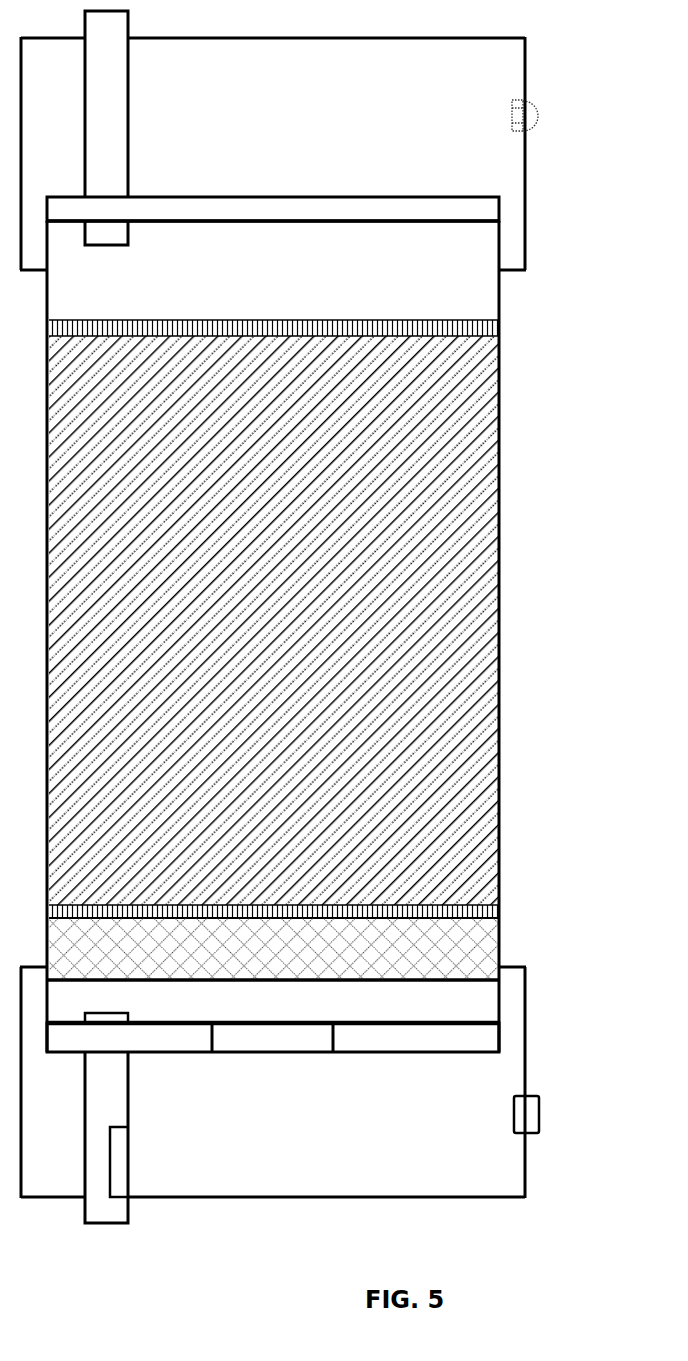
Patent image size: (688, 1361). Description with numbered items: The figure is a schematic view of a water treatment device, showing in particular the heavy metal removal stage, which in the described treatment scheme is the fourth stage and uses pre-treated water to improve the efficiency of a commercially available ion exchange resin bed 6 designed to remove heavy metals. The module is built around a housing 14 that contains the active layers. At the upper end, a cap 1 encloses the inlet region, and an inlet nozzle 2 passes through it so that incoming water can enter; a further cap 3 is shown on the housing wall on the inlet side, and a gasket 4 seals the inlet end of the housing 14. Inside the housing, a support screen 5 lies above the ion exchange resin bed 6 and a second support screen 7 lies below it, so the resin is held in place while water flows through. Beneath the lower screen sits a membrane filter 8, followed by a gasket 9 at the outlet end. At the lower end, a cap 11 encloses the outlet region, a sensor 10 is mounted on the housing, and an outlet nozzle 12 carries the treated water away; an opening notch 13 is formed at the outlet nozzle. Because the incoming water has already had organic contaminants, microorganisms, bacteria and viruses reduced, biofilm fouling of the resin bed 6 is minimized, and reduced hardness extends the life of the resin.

The cap 1 is at (275, 62).
The inlet nozzle 2 is at (107, 162).
The cap 3 is at (540, 116).
The gasket 4 is at (422, 208).
The support screen 5 is at (499, 326).
The ion exchange resin bed 6 is at (320, 620).
The support screen 7 is at (499, 912).
The membrane filter 8 is at (499, 950).
The gasket 9 is at (465, 1042).
The sensor 10 is at (540, 1112).
The cap 11 is at (275, 1152).
The outlet nozzle 12 is at (366, 1137).
The opening notch 13 is at (120, 1181).
The housing 14 is at (499, 687).